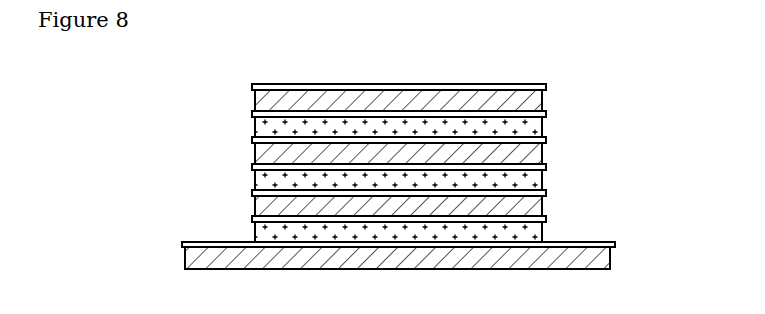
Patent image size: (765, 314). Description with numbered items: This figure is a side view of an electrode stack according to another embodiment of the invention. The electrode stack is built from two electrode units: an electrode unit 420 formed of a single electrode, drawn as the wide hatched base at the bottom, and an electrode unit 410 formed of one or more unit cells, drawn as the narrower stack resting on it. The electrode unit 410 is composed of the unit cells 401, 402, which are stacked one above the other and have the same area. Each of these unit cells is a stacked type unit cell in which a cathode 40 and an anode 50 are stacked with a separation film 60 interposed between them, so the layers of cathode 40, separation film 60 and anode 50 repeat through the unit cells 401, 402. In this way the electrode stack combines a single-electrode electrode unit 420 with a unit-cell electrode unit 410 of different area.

The cathode 40 is at (509, 127).
The anode 50 is at (457, 101).
The separation film 60 is at (405, 89).
The unit cell 401 is at (248, 92).
The unit cell 402 is at (248, 168).
The electrode unit 410 is at (629, 91).
The electrode unit 420 is at (175, 243).